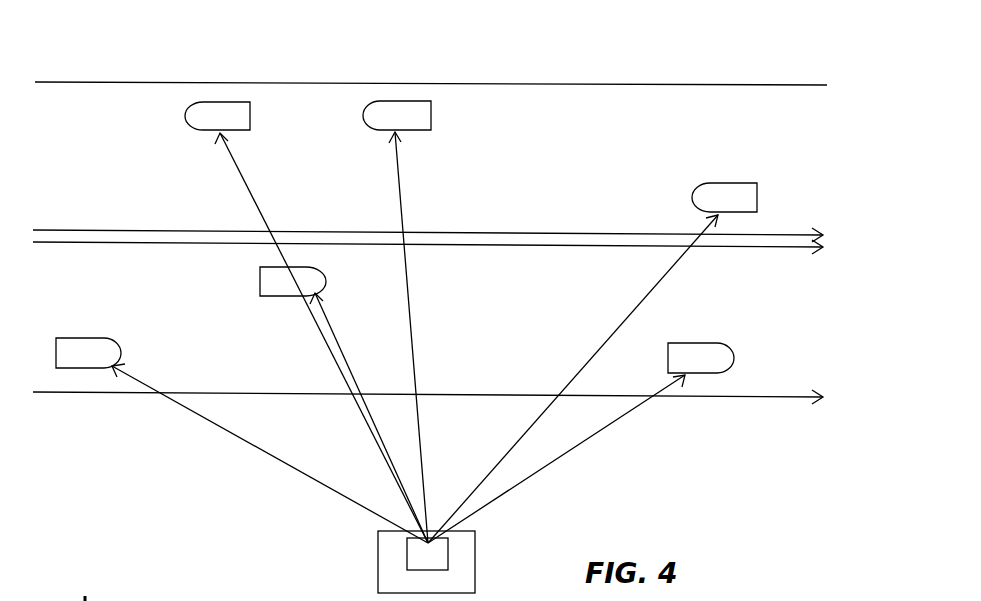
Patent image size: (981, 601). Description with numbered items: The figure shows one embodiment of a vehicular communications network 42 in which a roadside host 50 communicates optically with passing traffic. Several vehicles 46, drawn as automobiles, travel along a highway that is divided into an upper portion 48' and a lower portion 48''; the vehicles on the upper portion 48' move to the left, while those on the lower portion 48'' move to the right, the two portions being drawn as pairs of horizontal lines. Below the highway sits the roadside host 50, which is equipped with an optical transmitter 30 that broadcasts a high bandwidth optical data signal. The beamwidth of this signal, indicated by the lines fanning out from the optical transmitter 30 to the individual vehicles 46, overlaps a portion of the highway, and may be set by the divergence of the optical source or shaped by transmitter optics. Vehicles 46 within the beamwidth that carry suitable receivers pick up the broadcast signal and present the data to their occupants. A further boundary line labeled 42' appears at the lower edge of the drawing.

The vehicular communications network 42 is at (428, 42).
The roadway edge line 42' is at (81, 585).
The upper portion of highway 48' is at (417, 181).
The lower portion of highway 48'' is at (417, 330).
The vehicle 46 is at (231, 128).
The optical transmitter 30 is at (407, 553).
The roadside host 50 is at (475, 558).